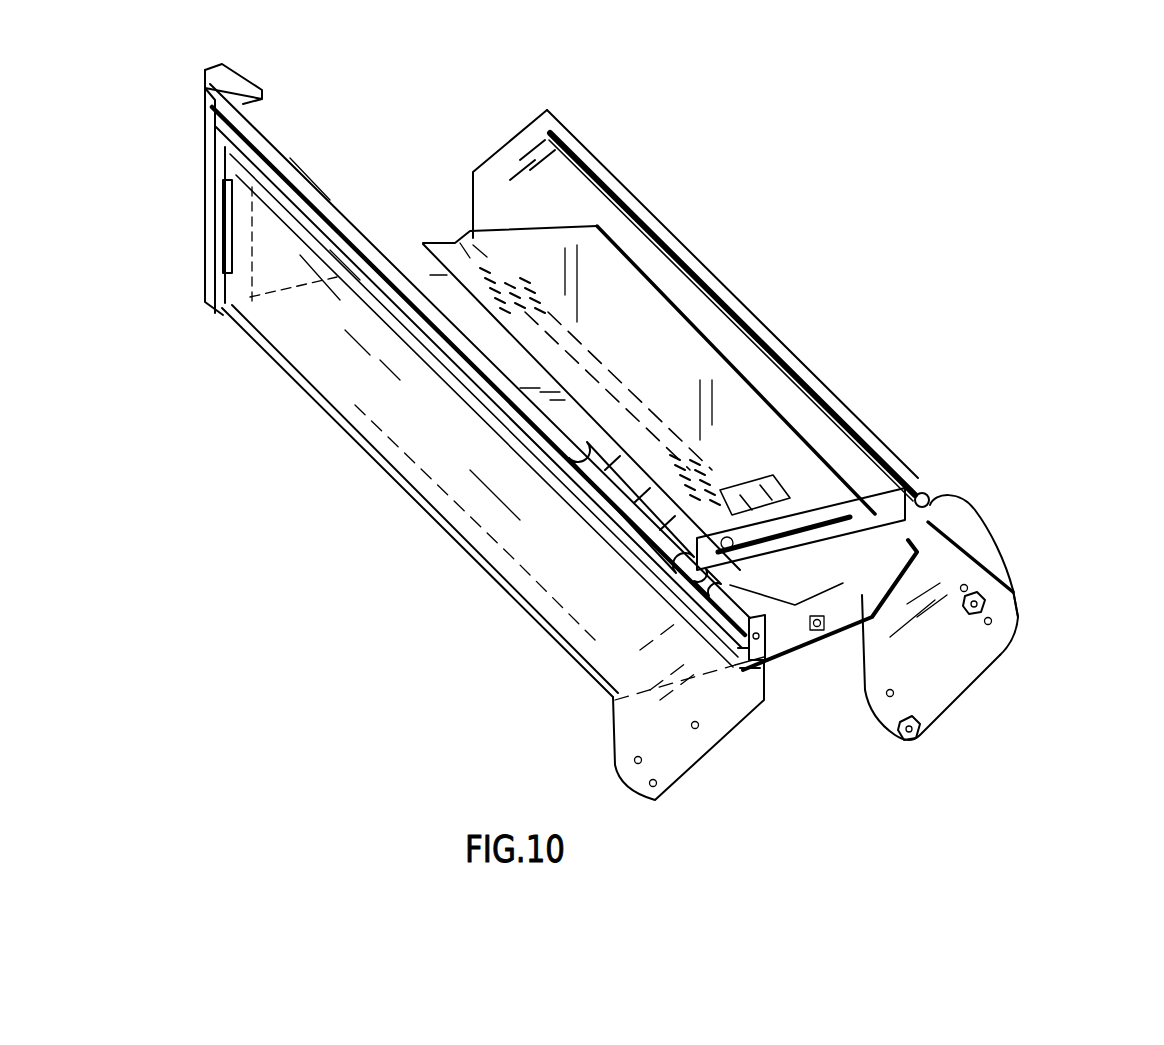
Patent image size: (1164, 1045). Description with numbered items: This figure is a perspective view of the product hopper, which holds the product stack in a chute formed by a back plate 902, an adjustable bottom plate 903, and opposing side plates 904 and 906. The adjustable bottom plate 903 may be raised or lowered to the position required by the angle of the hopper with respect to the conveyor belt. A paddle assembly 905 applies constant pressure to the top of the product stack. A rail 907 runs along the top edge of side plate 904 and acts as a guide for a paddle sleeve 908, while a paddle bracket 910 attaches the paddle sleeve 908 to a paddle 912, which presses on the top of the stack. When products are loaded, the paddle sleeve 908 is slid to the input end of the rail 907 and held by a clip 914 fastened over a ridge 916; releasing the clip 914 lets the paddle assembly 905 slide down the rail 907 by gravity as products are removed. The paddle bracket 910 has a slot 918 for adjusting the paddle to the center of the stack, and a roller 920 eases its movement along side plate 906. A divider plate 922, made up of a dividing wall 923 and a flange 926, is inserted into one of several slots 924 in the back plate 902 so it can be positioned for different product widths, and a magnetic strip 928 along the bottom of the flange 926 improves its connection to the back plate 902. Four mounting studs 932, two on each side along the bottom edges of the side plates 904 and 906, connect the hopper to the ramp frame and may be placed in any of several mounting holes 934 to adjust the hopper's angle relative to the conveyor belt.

The back plate 902 is at (410, 262).
The adjustable bottom plate 903 is at (770, 700).
The side plate 904 is at (310, 322).
The paddle assembly 905 is at (943, 488).
The side plate 906 is at (577, 192).
The rail 907 is at (345, 422).
The paddle sleeve 908 is at (648, 530).
The paddle bracket 910 is at (1015, 590).
The paddle 912 is at (768, 503).
The clip 914 is at (262, 92).
The ridge 916 is at (600, 465).
The slot 918 is at (823, 482).
The roller 920 is at (950, 493).
The divider plate 922 is at (640, 338).
The dividing wall 923 is at (770, 455).
The slots 924 is at (493, 297).
The flange 926 is at (797, 600).
The magnetic strip 928 is at (868, 598).
The mounting studs 932 is at (988, 605).
The mounting holes 934 is at (634, 760).